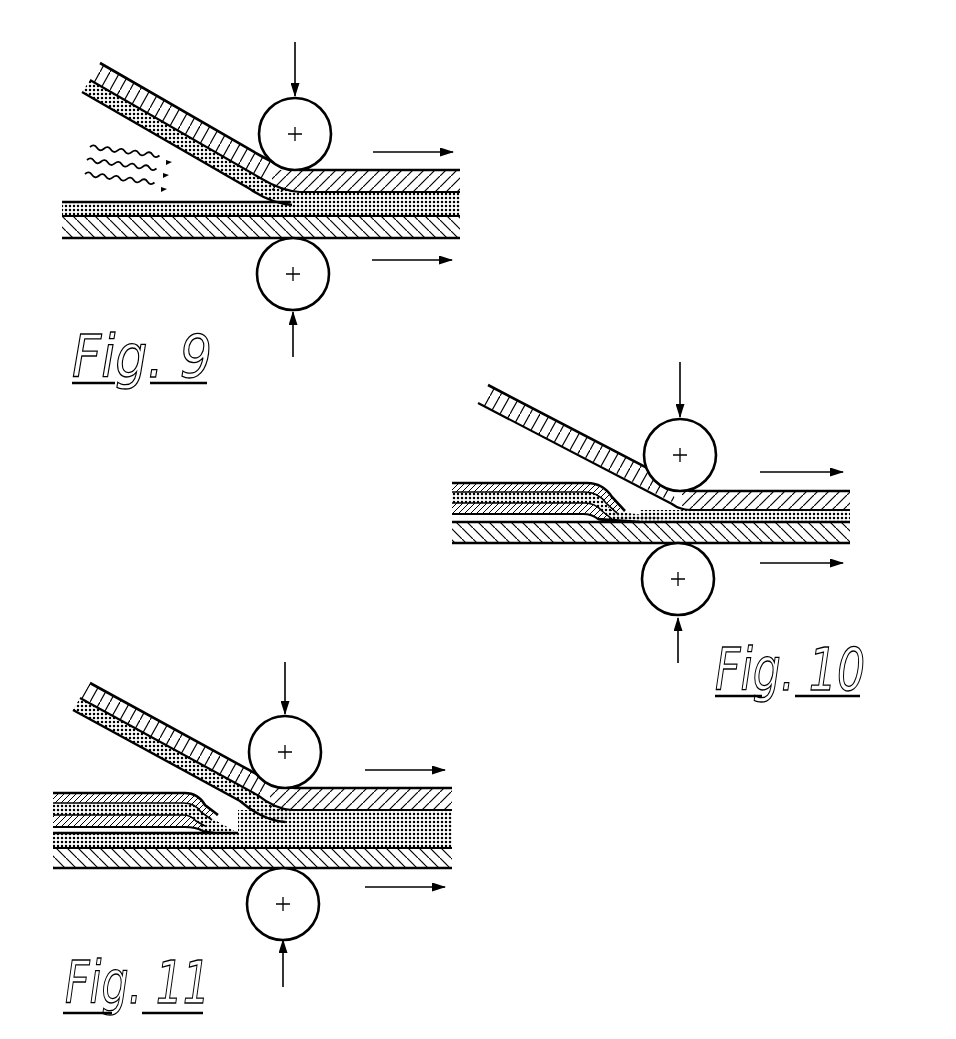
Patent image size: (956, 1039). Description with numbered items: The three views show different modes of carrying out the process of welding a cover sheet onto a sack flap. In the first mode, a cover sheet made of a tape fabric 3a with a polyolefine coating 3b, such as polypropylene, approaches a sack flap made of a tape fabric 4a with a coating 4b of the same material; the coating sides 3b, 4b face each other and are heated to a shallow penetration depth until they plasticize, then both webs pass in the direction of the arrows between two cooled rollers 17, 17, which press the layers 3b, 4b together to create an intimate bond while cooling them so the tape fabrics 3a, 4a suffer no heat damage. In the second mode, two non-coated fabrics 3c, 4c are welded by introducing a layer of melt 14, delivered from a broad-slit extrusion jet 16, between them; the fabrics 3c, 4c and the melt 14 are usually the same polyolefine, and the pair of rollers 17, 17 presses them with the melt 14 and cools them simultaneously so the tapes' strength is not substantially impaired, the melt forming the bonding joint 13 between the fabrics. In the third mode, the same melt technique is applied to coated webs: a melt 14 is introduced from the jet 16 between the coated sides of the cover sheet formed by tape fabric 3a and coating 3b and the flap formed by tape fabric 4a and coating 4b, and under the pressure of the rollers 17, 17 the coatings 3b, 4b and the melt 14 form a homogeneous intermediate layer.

In FIG. 9, the tape fabric 3a is at (118, 85).
In FIG. 11, the tape fabric 3a is at (113, 706).
In FIG. 9, the coating 3b is at (177, 132).
In FIG. 11, the coating 3b is at (148, 745).
In FIG. 10, the non-coated fabric 3c is at (540, 425).
In FIG. 9, the tape fabric 4a is at (97, 228).
In FIG. 11, the tape fabric 4a is at (142, 855).
In FIG. 9, the coating 4b is at (172, 212).
In FIG. 11, the coating 4b is at (98, 855).
In FIG. 10, the non-coated fabric 4c is at (508, 531).
In FIG. 10, the adhesive joint 13 is at (608, 520).
In FIG. 10, the layer of melt 14 is at (781, 520).
In FIG. 11, the layer of melt 14 is at (380, 835).
In FIG. 10, the broad-slit extrusion jet 16 is at (478, 485).
In FIG. 11, the broad-slit extrusion jet 16 is at (85, 793).
In FIG. 9, the cooled rollers 17 is at (305, 110).
In FIG. 10, the cooled rollers 17 is at (697, 437).
In FIG. 11, the cooled rollers 17 is at (302, 736).